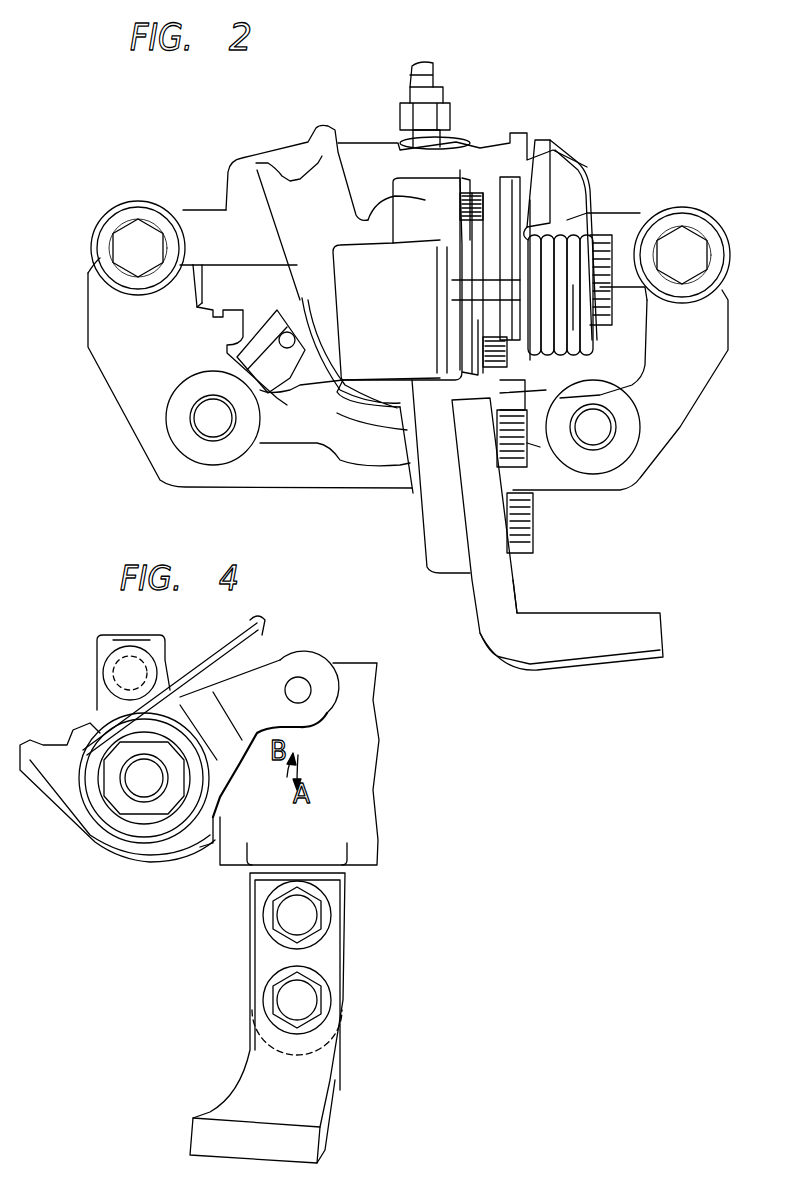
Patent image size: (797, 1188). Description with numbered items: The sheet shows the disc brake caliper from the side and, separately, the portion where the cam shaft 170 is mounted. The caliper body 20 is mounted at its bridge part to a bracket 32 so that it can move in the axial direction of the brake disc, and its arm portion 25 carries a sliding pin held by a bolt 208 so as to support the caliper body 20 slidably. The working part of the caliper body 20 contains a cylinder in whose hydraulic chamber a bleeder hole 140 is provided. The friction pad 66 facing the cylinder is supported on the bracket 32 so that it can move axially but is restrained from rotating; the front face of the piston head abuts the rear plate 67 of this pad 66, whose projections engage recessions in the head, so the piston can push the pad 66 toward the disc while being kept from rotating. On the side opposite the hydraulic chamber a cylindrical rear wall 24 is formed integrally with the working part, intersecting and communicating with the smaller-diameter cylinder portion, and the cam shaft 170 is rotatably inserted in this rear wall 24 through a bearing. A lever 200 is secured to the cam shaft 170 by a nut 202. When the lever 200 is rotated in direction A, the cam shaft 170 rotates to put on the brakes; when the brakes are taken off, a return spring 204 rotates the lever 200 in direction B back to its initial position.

In FIG. 2, the caliper body 20 is at (284, 140).
In FIG. 4, the caliper body 20 is at (361, 656).
In FIG. 2, the rear wall 24 is at (357, 270).
In FIG. 2, the arm portion 25 is at (208, 217).
In FIG. 2, the bracket 32 is at (355, 445).
In FIG. 2, the friction pad 66 is at (298, 402).
In FIG. 2, the rear plate 67 is at (227, 293).
In FIG. 2, the bleeder hole 140 is at (420, 62).
In FIG. 4, the cam shaft 170 is at (149, 788).
In FIG. 2, the lever 200 is at (550, 160).
In FIG. 4, the lever 200 is at (282, 660).
In FIG. 2, the nut 202 is at (607, 250).
In FIG. 4, the nut 202 is at (128, 812).
In FIG. 2, the return spring 204 is at (585, 180).
In FIG. 4, the return spring 204 is at (190, 680).
In FIG. 2, the bolt 208 is at (142, 228).